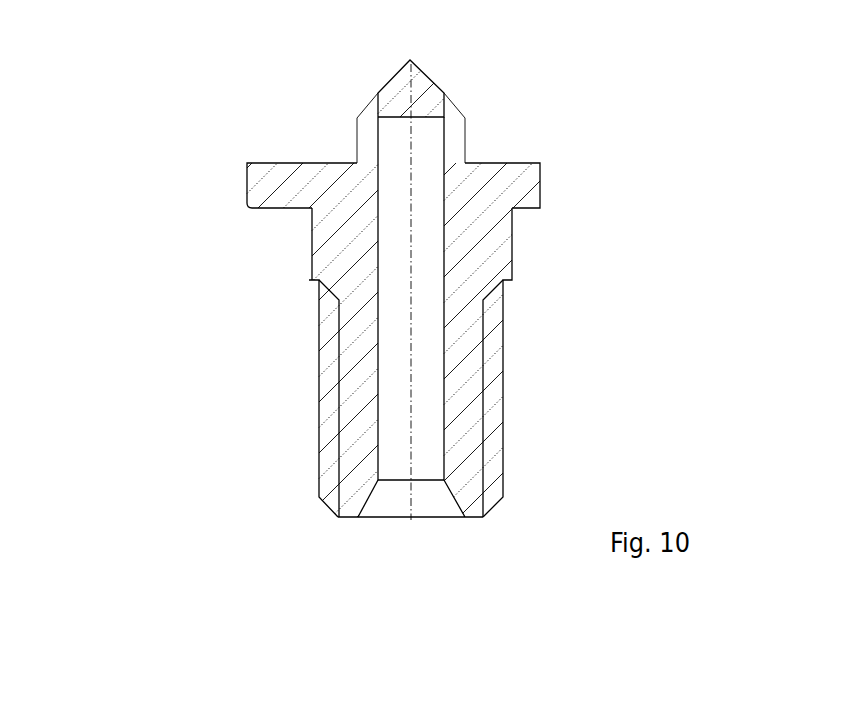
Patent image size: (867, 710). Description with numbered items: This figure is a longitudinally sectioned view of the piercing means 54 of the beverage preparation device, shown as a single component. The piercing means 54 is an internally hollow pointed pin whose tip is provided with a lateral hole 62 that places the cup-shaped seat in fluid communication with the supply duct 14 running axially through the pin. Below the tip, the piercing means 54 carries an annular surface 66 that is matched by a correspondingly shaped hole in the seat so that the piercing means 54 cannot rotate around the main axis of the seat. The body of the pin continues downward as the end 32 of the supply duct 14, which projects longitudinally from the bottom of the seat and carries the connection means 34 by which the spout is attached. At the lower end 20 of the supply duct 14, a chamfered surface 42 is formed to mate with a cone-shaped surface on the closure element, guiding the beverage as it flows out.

The supply duct 14 is at (443, 320).
The end of the supply duct 20 is at (455, 490).
The end of the supply duct 32 is at (340, 410).
The connection means 34 is at (292, 368).
The chamfered surface 42 is at (372, 493).
The piercing means 54 is at (476, 89).
The lateral hole 62 is at (367, 138).
The annular surface 66 is at (247, 182).